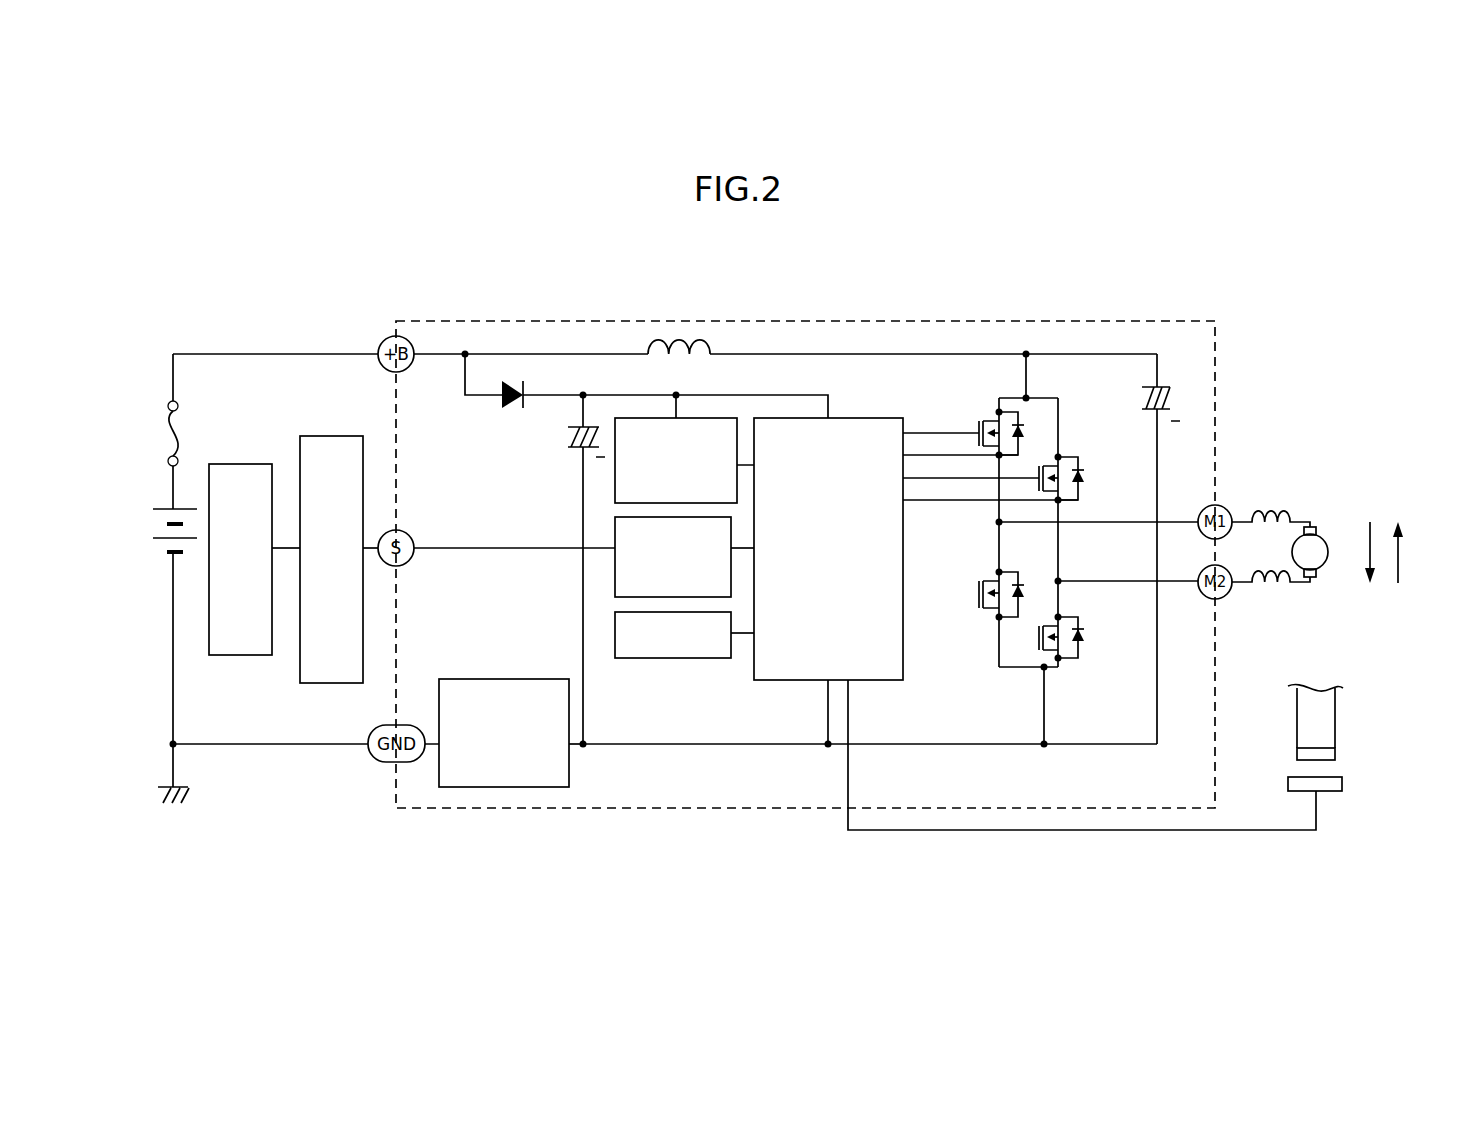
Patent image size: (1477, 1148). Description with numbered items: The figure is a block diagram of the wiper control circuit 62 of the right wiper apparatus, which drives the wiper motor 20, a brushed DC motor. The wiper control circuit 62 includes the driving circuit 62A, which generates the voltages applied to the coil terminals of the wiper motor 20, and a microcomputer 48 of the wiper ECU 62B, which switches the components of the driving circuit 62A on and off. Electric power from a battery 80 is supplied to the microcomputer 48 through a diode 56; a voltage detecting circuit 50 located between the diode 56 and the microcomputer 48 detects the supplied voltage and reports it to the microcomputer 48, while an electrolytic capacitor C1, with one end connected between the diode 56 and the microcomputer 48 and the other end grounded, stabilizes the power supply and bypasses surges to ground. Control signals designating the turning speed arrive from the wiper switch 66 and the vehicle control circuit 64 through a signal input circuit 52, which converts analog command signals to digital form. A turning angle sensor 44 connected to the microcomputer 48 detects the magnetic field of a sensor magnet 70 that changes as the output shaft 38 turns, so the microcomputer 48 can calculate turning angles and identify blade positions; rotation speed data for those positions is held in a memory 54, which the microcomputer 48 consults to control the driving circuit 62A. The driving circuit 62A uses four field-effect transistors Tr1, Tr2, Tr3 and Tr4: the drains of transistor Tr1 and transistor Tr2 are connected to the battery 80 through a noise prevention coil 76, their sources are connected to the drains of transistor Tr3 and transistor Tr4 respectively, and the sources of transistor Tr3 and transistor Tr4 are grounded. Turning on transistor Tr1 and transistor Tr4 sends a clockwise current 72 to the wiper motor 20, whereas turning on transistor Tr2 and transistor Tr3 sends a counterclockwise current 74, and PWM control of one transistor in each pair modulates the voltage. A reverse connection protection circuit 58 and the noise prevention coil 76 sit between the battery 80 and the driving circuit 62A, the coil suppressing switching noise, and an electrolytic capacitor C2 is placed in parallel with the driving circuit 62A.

The wiper motor 20 is at (1324, 568).
The output shaft 38 is at (1337, 708).
The turning angle sensor 44 is at (1342, 783).
The microcomputer 48 is at (875, 418).
The voltage detecting circuit 50 is at (615, 485).
The signal input circuit 52 is at (615, 556).
The memory 54 is at (615, 628).
The diode 56 is at (502, 400).
The reverse connection protection circuit 58 is at (468, 679).
The wiper control circuit 62 is at (840, 321).
The driving circuit 62A is at (1065, 514).
The wiper ECU 62B is at (740, 370).
The vehicle control circuit 64 is at (340, 436).
The wiper switch 66 is at (243, 464).
The sensor magnet 70 is at (1337, 750).
The clockwise current 72 is at (1366, 560).
The counterclockwise current 74 is at (1400, 553).
The noise prevention coil 76 is at (700, 337).
The battery 80 is at (160, 510).
The electrolytic capacitor C1 is at (570, 569).
The electrolytic capacitor C2 is at (1173, 549).
The transistor Tr1 is at (999, 412).
The transistor Tr2 is at (1078, 457).
The transistor Tr3 is at (999, 572).
The transistor Tr4 is at (1078, 658).